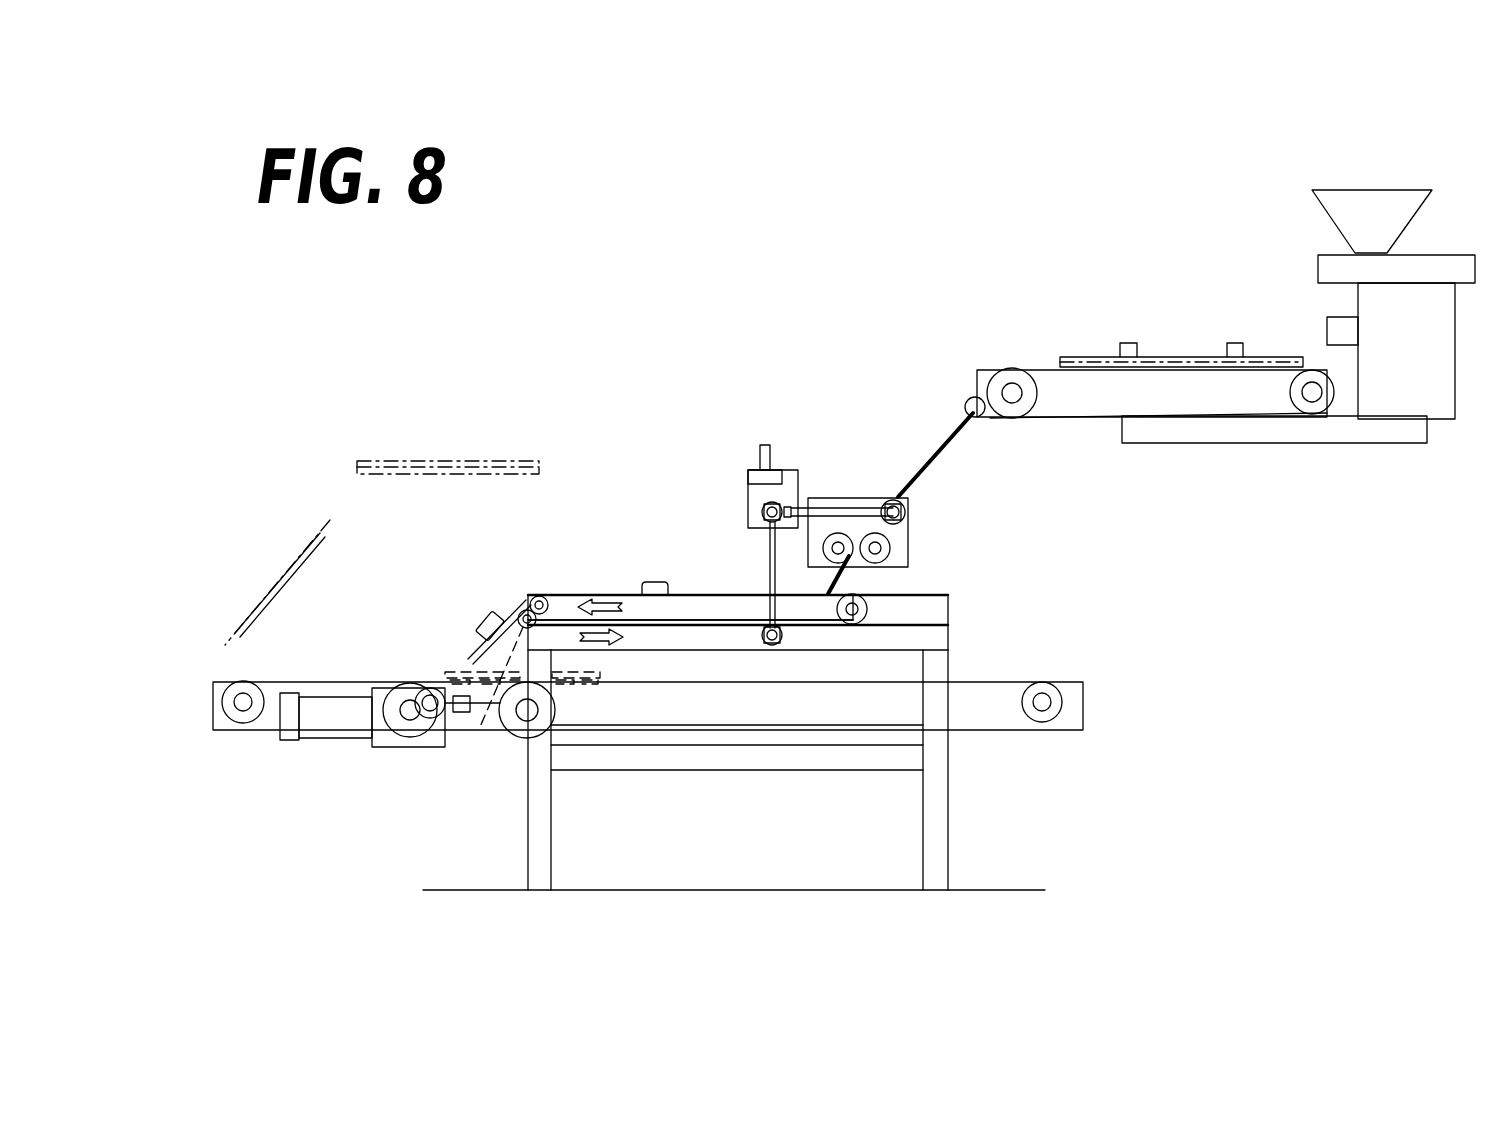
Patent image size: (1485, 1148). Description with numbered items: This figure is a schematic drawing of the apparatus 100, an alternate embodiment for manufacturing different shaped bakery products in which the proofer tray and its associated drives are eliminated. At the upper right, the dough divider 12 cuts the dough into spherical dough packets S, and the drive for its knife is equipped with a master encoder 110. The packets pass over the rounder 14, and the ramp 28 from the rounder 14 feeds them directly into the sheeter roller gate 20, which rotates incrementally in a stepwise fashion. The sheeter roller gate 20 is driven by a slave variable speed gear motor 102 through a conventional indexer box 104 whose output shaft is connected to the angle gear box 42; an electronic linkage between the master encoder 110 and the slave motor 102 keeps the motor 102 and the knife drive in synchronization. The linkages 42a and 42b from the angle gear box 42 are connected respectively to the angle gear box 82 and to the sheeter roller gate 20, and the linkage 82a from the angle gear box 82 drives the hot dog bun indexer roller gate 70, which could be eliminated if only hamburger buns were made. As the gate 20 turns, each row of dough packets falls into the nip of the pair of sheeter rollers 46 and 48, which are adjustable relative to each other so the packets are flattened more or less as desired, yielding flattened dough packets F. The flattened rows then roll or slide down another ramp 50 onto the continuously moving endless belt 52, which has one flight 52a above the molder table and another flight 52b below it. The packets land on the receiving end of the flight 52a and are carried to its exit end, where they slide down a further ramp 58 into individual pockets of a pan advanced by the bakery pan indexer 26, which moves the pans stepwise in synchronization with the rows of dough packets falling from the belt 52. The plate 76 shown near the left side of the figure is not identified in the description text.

The dough divider 12 is at (1292, 203).
The rounder 14 is at (1158, 316).
The spherical dough packets S is at (1131, 345).
The master encoder 110 is at (1333, 330).
The ramp 28 is at (940, 455).
The sheeter roller gate 20 is at (955, 512).
The sheeter roller 48 is at (880, 545).
The sheeter roller 46 is at (848, 560).
The angle gear box 42 is at (762, 512).
The linkage 42a is at (770, 580).
The linkage 42b is at (828, 498).
The slave variable speed gear motor 102 is at (773, 473).
The indexer box 104 is at (748, 475).
The ramp 50 is at (830, 592).
The endless belt 52 is at (735, 660).
The upper flight 52a is at (617, 594).
The lower flight 52b is at (658, 626).
The angle gear box 82 is at (782, 633).
The linkage 82a is at (692, 625).
The hot dog bun roller gate 70 is at (522, 608).
The ramp 58 is at (297, 552).
The plate 76 is at (443, 462).
The bakery pan indexer 26 is at (370, 785).
The apparatus 100 is at (1149, 583).
The flattened dough packets F is at (622, 594).